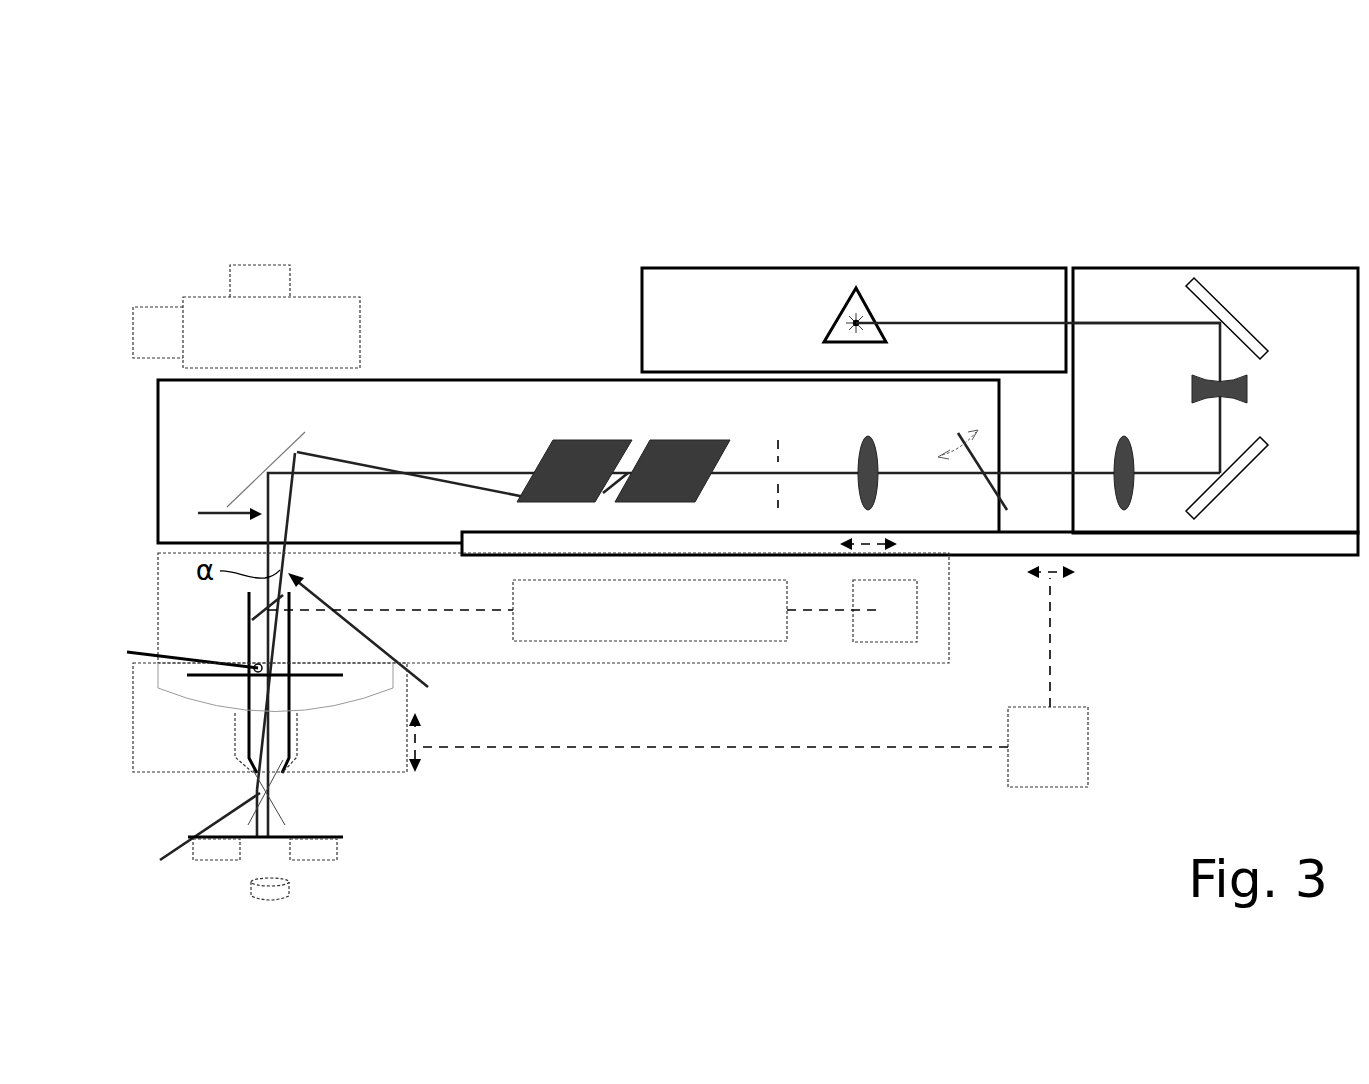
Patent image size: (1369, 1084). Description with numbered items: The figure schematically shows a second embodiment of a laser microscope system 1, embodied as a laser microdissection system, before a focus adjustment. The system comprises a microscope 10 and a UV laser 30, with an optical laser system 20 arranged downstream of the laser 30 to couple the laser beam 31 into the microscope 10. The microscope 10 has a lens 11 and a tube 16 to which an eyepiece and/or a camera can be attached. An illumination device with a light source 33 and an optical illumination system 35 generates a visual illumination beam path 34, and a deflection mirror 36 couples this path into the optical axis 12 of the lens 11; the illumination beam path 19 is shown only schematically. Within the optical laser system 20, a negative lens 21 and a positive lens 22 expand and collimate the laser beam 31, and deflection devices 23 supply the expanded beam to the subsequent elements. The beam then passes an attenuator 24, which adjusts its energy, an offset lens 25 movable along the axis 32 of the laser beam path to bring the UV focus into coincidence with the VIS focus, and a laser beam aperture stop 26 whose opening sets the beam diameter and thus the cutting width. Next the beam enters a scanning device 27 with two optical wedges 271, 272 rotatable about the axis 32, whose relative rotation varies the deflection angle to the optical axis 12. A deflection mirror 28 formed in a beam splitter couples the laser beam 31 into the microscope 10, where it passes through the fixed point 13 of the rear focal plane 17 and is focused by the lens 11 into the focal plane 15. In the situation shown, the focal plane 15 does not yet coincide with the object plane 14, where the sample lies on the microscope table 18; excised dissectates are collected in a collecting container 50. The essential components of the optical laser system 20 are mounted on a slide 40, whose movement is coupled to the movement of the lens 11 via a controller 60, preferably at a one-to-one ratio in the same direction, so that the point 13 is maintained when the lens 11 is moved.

The laser microscope system 1 is at (158, 145).
The microscope 10 is at (158, 578).
The lens 11 is at (133, 740).
The optical axis 12 is at (210, 516).
The fixed point 13 is at (175, 651).
The object plane 14 is at (343, 838).
The focal plane 15 is at (204, 821).
The tube 16 is at (350, 297).
The rear focal plane 17 is at (343, 676).
The microscope table 18 is at (320, 860).
The illumination beam path 19 is at (249, 652).
The optical laser system 20 is at (1122, 623).
The negative lens 21 is at (1248, 385).
The positive lens 22 is at (1125, 445).
The deflection devices 23 is at (1233, 318).
The attenuator 24 is at (985, 450).
The offset lens 25 is at (878, 440).
The laser beam aperture stop 26 is at (780, 440).
The scanning device 27 is at (620, 445).
The optical wedge 271 is at (600, 440).
The optical wedge 272 is at (688, 440).
The deflection mirror 28 is at (283, 452).
The UV laser 30 is at (782, 268).
The laser beam 31 is at (965, 323).
The axis of the laser beam path 32 is at (316, 478).
The light source 33 is at (905, 642).
The illumination beam path 34 is at (485, 612).
The optical illumination system 35 is at (733, 641).
The deflection mirror 36 is at (253, 618).
The slide 40 is at (1245, 553).
The collecting container 50 is at (290, 890).
The controller 60 is at (1090, 750).